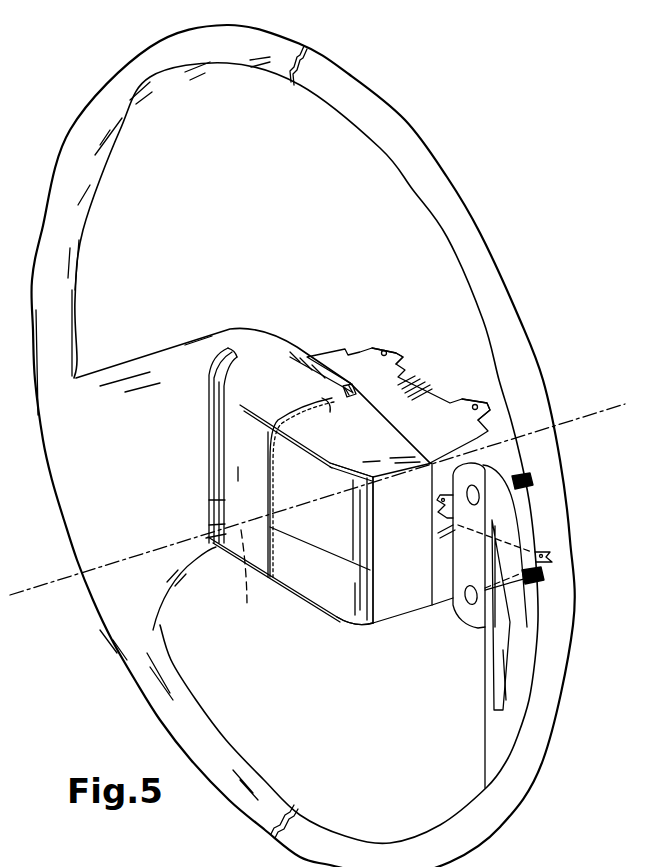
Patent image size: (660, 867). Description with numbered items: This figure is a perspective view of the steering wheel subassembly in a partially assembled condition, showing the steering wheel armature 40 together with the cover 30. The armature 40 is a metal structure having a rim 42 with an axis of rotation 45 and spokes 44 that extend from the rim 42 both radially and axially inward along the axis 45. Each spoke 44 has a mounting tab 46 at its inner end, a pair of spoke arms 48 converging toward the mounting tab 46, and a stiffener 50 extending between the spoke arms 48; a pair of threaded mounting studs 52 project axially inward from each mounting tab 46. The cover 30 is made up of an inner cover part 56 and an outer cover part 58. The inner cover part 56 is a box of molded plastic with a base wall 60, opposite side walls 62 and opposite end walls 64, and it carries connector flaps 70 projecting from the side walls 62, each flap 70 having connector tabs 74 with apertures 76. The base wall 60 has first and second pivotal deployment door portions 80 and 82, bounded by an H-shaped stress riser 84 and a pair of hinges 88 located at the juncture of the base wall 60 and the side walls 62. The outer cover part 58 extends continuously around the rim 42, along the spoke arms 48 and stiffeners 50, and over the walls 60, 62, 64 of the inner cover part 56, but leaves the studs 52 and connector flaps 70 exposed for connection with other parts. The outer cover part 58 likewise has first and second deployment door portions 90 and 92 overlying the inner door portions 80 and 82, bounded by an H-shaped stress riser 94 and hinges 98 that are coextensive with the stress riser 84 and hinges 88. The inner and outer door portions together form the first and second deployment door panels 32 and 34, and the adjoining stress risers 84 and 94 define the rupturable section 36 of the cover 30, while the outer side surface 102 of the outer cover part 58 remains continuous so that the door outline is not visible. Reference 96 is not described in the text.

The cover 30 is at (126, 362).
The first deployment door panel 32 is at (214, 454).
The second deployment door panel 34 is at (213, 528).
The rupturable section 36 is at (215, 505).
The steering wheel armature 40 is at (408, 122).
The rim 42 is at (440, 186).
The spokes 44 is at (478, 681).
The axis of rotation 45 is at (585, 412).
The mounting tab 46 is at (478, 518).
The spoke arms 48 is at (525, 625).
The stiffener 50 is at (503, 675).
The threaded mounting studs 52 is at (531, 470).
The inner cover part 56 is at (325, 418).
The outer cover part 58 is at (267, 325).
The base wall 60 is at (306, 572).
The side walls 62 is at (387, 431).
The end walls 64 is at (387, 607).
The connector flaps 70 is at (389, 383).
The connector tabs 74 is at (383, 350).
The apertures 76 is at (386, 352).
The first deployment door portion 80 is at (357, 478).
The second deployment door portion 82 is at (336, 592).
The stress riser 84 is at (288, 543).
The hinges 88 is at (306, 441).
The first deployment door portion 90 is at (233, 481).
The second deployment door portion 92 is at (192, 564).
The stress riser 94 is at (243, 576).
The side wall 96 is at (272, 527).
The hinges 98 is at (247, 411).
The outer side surface 102 is at (233, 431).